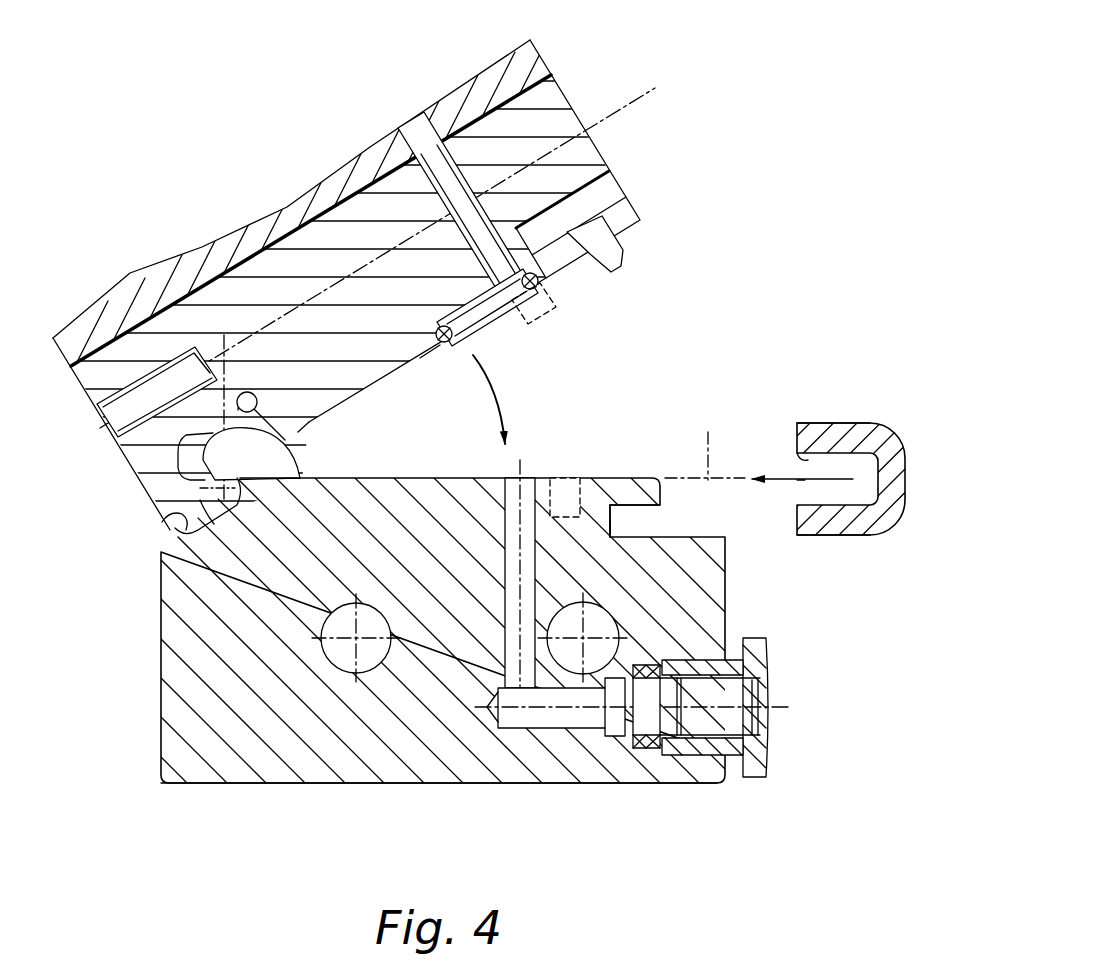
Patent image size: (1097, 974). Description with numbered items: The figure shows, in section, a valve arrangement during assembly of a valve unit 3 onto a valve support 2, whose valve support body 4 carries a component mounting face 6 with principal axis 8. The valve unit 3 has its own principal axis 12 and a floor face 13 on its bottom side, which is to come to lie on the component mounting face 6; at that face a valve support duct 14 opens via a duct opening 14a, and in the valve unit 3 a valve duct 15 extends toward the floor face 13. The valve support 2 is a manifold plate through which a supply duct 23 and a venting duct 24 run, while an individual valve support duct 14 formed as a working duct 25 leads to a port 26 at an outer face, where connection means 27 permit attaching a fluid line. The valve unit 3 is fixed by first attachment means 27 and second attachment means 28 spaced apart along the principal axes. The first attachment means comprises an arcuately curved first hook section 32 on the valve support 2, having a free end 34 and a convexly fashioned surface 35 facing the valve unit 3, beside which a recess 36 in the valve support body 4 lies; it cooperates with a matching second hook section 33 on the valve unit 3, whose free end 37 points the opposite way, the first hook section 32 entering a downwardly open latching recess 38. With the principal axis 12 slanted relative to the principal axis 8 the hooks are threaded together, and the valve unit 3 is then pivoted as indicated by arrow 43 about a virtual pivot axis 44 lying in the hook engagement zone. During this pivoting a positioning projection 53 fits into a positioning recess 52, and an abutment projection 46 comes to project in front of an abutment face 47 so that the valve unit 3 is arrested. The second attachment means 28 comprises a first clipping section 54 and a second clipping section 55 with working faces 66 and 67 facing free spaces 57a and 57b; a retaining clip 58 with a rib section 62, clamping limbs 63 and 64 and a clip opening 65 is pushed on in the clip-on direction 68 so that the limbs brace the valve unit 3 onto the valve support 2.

The valve support 2 is at (180, 718).
The valve unit 3 is at (140, 289).
The valve support body 4 is at (238, 744).
The component mounting face 6 is at (365, 476).
The principal axis 8 is at (705, 439).
The principal axis 12 is at (628, 72).
The floor face 13 is at (430, 352).
The valve support duct 14 is at (695, 706).
The duct opening 14a is at (506, 480).
The valve duct 15 is at (412, 165).
The supply duct 23 is at (608, 646).
The venting duct 24 is at (348, 662).
The working duct 25 is at (514, 714).
The port 26 is at (710, 718).
The first attachment means 27 is at (148, 520).
The second attachment means 28 is at (634, 476).
The first hook section 32 is at (264, 420).
The second hook section 33 is at (212, 508).
The free end 34 is at (202, 457).
The convexly fashioned surface 35 is at (278, 436).
The recess 36 is at (172, 522).
The free end 37 is at (240, 502).
The latching recess 38 is at (252, 393).
The pivotal movement 43 is at (500, 378).
The virtual pivot axis 44 is at (227, 390).
The abutment projection 46 is at (610, 262).
The abutment face 47 is at (760, 480).
The positioning recess 52 is at (567, 478).
The positioning projection 53 is at (548, 332).
The first clipping section 54 is at (618, 478).
The second clipping section 55 is at (570, 257).
The free space 57a is at (612, 528).
The free space 57b is at (546, 205).
The retaining clip 58 is at (882, 424).
The rib section 62 is at (896, 462).
The clamping limb 63 is at (834, 520).
The clamping limb 64 is at (828, 428).
The clip opening 65 is at (798, 458).
The working face 66 is at (640, 514).
The working face 67 is at (577, 225).
The clip-on direction 68 is at (792, 482).